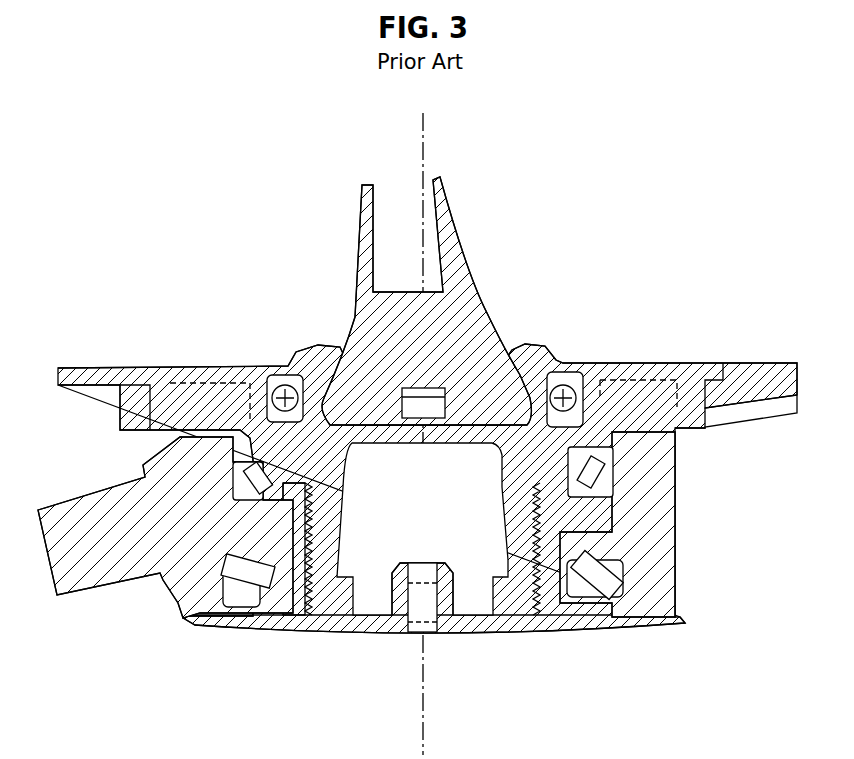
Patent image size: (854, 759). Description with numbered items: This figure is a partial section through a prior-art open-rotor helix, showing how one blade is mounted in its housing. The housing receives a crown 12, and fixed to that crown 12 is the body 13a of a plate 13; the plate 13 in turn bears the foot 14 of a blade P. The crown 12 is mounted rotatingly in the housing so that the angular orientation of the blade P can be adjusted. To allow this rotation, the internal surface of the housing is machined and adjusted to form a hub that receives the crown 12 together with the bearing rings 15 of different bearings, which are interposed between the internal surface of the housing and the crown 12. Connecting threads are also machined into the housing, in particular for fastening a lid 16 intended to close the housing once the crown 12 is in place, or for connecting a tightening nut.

The crown 12 is at (286, 590).
The plate 13 is at (658, 345).
The body of the plate 13a is at (507, 520).
The foot of the blade 14 is at (380, 330).
The bearing rings 15 is at (252, 474).
The lid 16 is at (367, 632).
The blade P is at (423, 128).